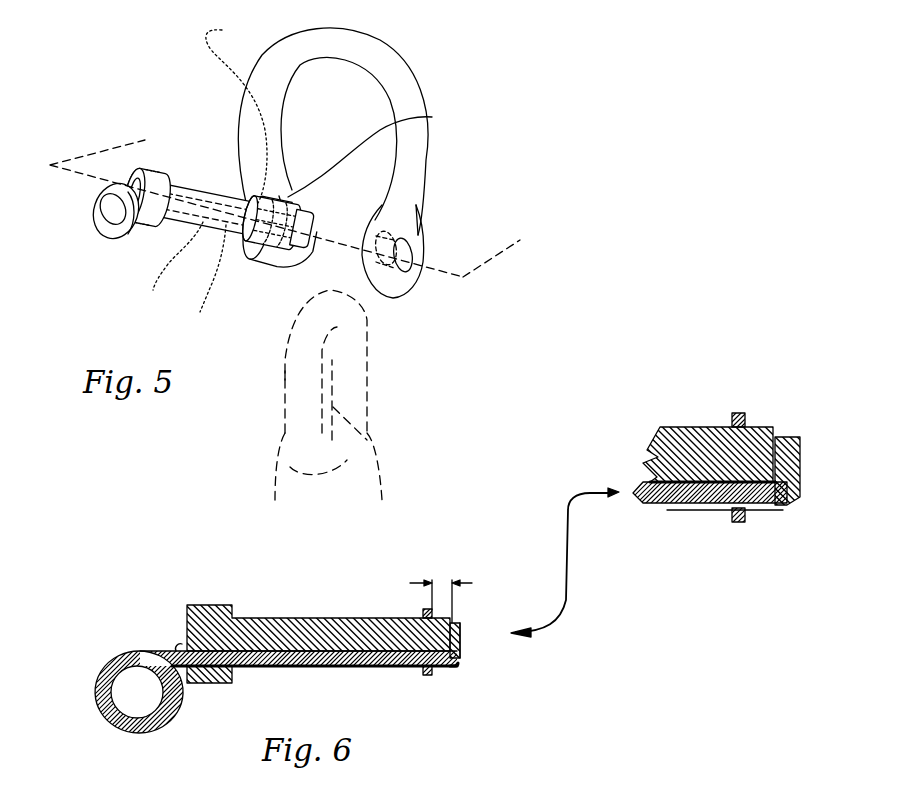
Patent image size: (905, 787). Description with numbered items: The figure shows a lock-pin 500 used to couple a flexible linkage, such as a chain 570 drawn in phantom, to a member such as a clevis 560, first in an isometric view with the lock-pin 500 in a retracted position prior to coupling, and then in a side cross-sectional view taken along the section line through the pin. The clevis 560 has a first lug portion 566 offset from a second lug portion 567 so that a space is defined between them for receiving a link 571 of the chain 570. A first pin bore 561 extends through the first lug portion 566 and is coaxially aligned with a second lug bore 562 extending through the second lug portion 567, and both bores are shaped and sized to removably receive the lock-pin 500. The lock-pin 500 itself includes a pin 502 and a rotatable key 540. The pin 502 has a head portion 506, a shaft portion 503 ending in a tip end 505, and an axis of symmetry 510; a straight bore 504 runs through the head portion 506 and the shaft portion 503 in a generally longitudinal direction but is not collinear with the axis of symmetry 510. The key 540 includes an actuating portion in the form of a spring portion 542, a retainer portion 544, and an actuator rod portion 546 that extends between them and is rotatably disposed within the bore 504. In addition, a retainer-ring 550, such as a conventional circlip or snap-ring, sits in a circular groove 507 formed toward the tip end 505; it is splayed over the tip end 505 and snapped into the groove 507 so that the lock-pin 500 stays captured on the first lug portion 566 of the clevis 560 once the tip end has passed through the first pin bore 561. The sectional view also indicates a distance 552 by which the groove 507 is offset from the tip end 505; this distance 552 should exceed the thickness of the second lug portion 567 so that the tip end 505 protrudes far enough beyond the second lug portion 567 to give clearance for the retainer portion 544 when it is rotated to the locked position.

In FIG. 5, the lock-pin 500 is at (143, 272).
In FIG. 5, the pin 502 is at (192, 198).
In FIG. 6, the pin 502 is at (260, 585).
In FIG. 5, the shaft portion 503 is at (203, 187).
In FIG. 5, the straight bore 504 is at (221, 279).
In FIG. 6, the tip end 505 is at (460, 667).
In FIG. 5, the head portion 506 is at (127, 172).
In FIG. 6, the circular groove 507 is at (462, 630).
In FIG. 5, the axis of symmetry 510 is at (463, 277).
In FIG. 5, the rotatable key 540 is at (109, 253).
In FIG. 5, the spring portion 542 is at (95, 213).
In FIG. 5, the retainer portion 544 is at (312, 250).
In FIG. 6, the retainer portion 544 is at (462, 643).
In FIG. 5, the actuator rod portion 546 is at (178, 265).
In FIG. 6, the actuator rod portion 546 is at (657, 507).
In FIG. 5, the retainer-ring 550 is at (293, 192).
In FIG. 6, the retainer-ring 550 is at (423, 612).
In FIG. 6, the distance 552 is at (432, 582).
In FIG. 5, the clevis 560 is at (420, 60).
In FIG. 5, the first pin bore 561 is at (236, 112).
In FIG. 5, the second lug bore 562 is at (417, 285).
In FIG. 5, the first lug portion 566 is at (432, 117).
In FIG. 5, the second lug portion 567 is at (418, 235).
In FIG. 5, the chain 570 is at (387, 450).
In FIG. 5, the link 571 is at (283, 365).